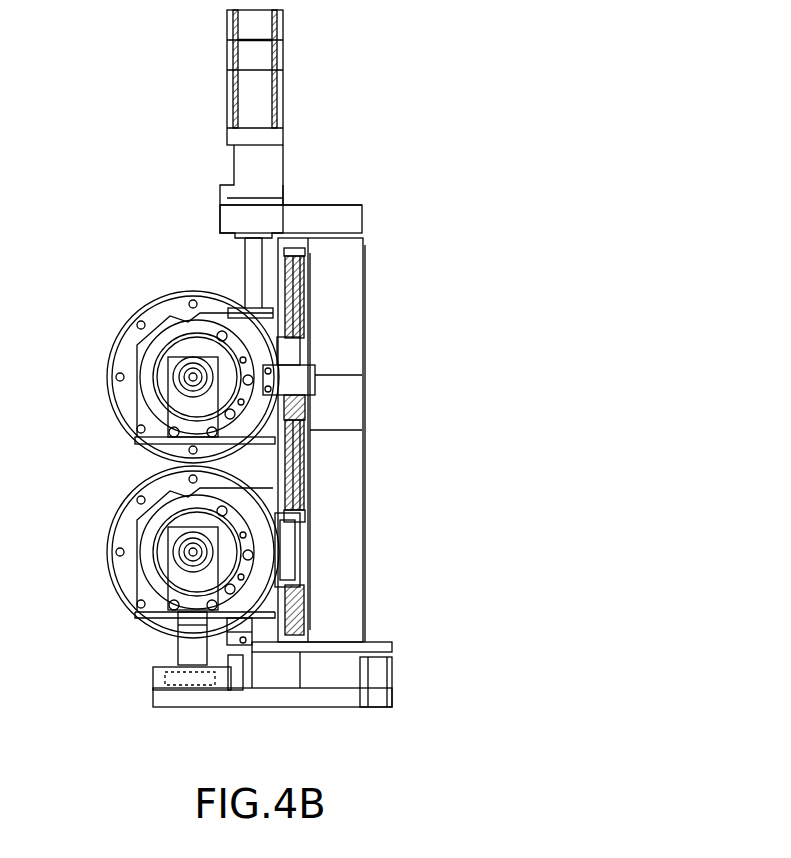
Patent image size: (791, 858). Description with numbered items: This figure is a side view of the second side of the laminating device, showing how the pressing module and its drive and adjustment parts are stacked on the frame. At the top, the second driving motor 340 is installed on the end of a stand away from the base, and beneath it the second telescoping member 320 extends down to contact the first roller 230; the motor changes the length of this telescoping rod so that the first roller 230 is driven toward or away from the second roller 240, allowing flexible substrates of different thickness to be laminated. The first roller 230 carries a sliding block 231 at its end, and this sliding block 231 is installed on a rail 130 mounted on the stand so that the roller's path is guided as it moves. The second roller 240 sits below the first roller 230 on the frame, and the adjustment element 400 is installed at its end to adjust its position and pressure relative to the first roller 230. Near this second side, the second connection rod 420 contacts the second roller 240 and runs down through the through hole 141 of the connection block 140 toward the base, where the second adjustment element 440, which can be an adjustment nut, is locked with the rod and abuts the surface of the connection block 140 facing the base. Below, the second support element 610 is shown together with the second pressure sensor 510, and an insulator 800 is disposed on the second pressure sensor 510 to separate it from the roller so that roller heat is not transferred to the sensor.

The rail 130 is at (310, 281).
The connection block 140 is at (258, 625).
The through hole 141 is at (263, 625).
The first roller 230 is at (118, 345).
The sliding block 231 is at (310, 354).
The second roller 240 is at (118, 520).
The second telescoping member 320 is at (245, 266).
The second driving motor 340 is at (245, 56).
The adjustment element 400 is at (248, 650).
The second connection rod 420 is at (255, 602).
The second adjustment element 440 is at (173, 655).
The second pressure sensor 510 is at (185, 690).
The second support element 610 is at (167, 633).
The insulator 800 is at (153, 678).